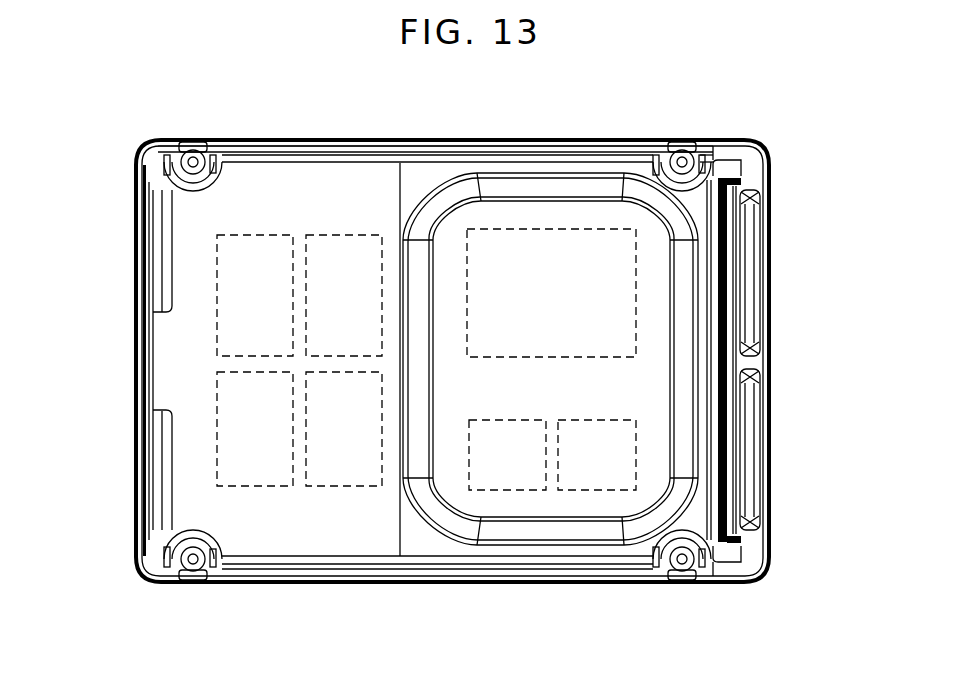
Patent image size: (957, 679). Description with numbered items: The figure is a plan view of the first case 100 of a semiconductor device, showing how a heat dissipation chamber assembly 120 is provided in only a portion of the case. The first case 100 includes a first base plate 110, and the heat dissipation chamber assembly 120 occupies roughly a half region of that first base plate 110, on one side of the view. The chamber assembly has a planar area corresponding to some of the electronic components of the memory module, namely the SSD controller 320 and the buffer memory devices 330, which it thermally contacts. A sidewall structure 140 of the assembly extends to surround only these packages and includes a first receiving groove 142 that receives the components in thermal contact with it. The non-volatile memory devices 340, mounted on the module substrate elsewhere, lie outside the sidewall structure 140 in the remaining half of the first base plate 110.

The first case 100 is at (792, 524).
The first base plate 110 is at (287, 540).
The heat dissipation chamber assembly 120 is at (431, 175).
The sidewall structure 140 is at (571, 190).
The first receiving groove 142 is at (662, 272).
The SSD controller 320 is at (636, 313).
The buffer memory devices 330 is at (636, 447).
The non-volatile memory devices 340 is at (217, 389).